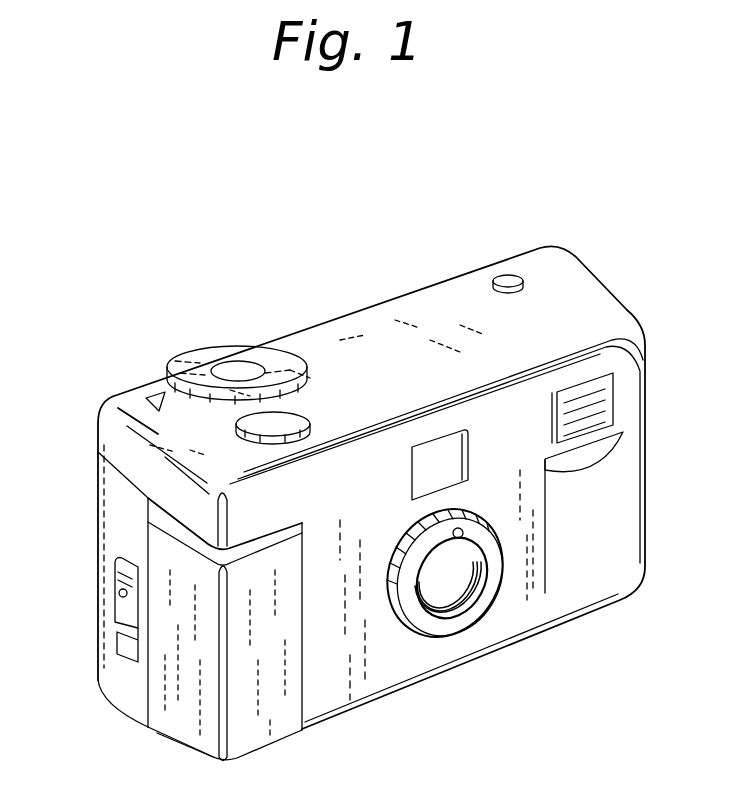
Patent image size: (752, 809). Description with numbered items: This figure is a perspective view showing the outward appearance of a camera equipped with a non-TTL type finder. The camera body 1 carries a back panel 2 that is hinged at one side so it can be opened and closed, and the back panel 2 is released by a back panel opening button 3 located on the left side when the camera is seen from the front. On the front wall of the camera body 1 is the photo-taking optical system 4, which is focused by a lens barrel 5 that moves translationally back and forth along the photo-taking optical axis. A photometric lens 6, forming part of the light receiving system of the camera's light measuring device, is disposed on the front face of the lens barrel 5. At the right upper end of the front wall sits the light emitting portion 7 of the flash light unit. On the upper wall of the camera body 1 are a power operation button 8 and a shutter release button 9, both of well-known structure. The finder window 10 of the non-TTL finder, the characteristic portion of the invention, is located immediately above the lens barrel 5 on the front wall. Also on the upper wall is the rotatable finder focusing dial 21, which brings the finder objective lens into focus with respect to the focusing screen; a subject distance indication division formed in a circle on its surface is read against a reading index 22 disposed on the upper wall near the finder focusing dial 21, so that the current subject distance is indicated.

The camera body 1 is at (625, 520).
The back panel 2 is at (101, 525).
The back panel opening button 3 is at (118, 595).
The photo-taking optical system 4 is at (448, 585).
The lens barrel 5 is at (500, 568).
The photometric lens 6 is at (463, 531).
The light emitting portion 7 is at (605, 391).
The power operation button 8 is at (506, 275).
The shutter release button 9 is at (298, 418).
The finder window 10 is at (430, 457).
The finder focusing dial 21 is at (250, 346).
The reading index 22 is at (155, 393).